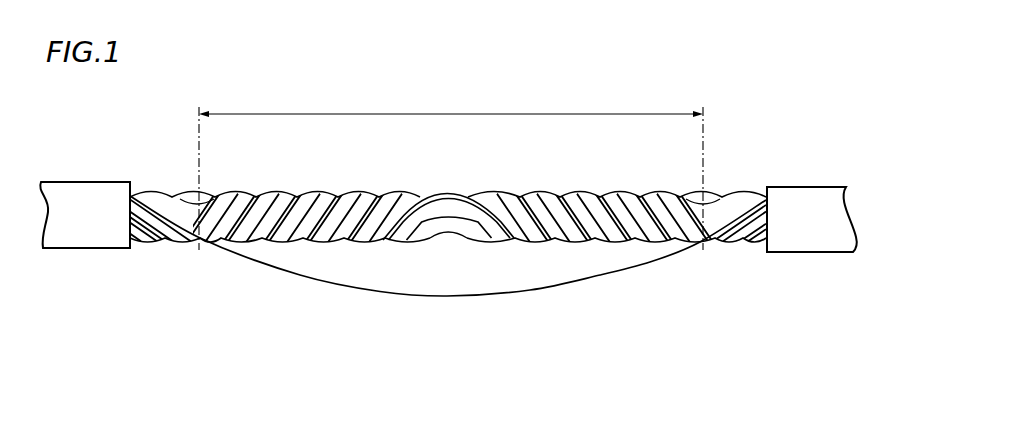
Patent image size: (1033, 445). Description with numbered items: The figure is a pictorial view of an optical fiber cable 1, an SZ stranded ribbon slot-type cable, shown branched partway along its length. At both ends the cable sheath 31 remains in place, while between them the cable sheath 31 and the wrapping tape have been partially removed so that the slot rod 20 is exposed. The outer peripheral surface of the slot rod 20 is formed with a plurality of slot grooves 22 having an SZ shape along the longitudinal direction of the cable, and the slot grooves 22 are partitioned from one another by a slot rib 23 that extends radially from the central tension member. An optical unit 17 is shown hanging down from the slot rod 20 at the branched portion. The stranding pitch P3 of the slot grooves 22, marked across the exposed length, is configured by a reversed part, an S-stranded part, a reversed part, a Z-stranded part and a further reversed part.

The optical fiber cable 1 is at (132, 271).
The optical unit 17 is at (375, 297).
The slot rod 20 is at (612, 188).
The slot groove 22 is at (400, 192).
The slot rib 23 is at (413, 192).
The cable sheath 31 is at (810, 245).
The stranding pitch P3 is at (451, 170).